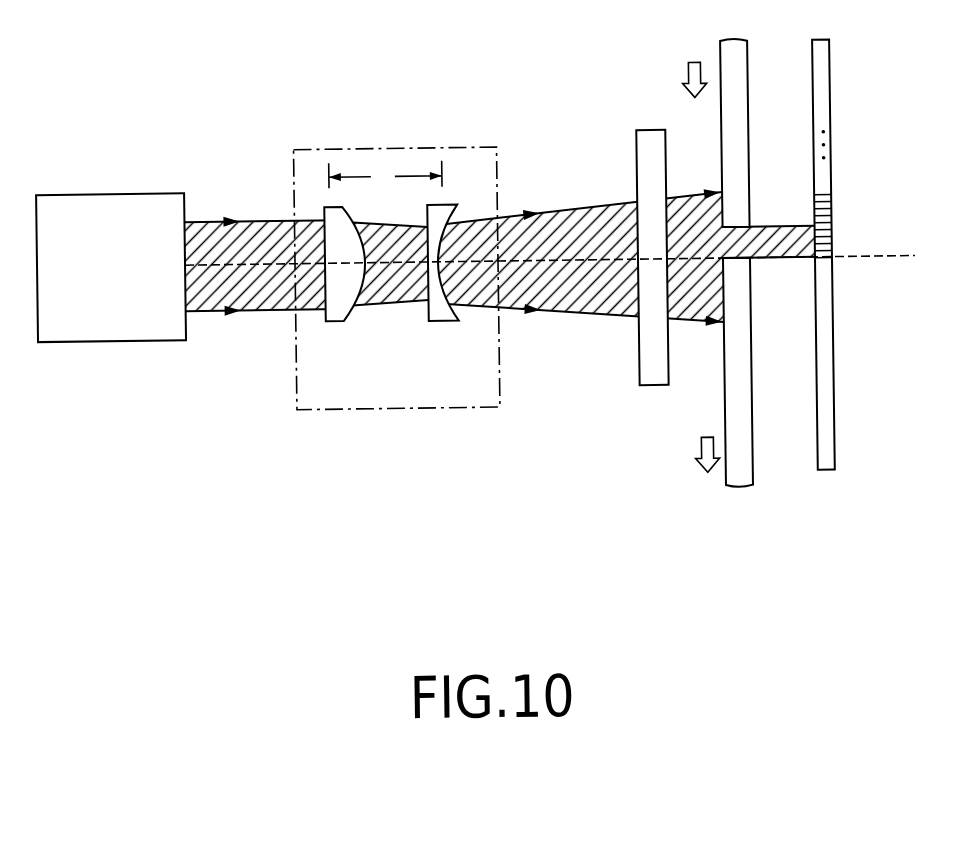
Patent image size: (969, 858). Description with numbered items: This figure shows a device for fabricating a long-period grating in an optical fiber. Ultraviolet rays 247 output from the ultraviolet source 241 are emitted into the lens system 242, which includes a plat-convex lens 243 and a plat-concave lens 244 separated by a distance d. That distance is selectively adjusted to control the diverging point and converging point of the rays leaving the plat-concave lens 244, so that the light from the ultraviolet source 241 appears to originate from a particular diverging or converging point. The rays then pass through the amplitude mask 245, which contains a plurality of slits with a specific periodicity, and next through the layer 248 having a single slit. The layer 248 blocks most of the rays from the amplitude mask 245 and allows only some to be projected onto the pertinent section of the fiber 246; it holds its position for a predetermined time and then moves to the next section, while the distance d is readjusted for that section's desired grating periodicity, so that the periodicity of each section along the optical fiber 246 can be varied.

The ultraviolet source 241 is at (115, 337).
The lens system 242 is at (458, 147).
The plat-convex lens 243 is at (348, 319).
The plat-concave lens 244 is at (447, 321).
The amplitude mask 245 is at (651, 387).
The optical fiber 246 is at (825, 472).
The UV light beam 247 is at (263, 265).
The layer having a slit 248 is at (737, 490).